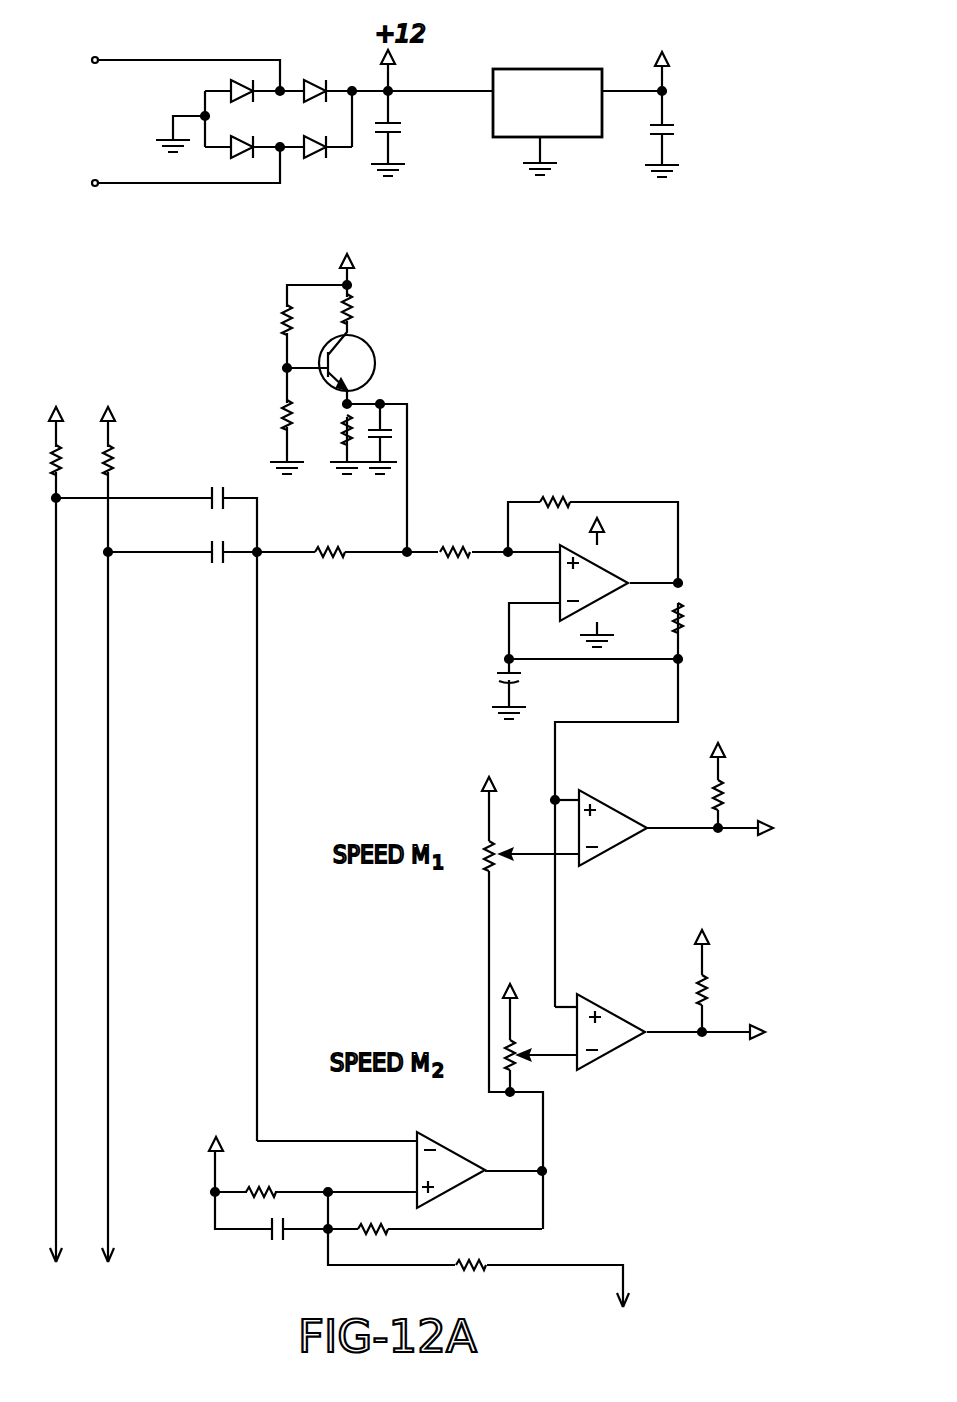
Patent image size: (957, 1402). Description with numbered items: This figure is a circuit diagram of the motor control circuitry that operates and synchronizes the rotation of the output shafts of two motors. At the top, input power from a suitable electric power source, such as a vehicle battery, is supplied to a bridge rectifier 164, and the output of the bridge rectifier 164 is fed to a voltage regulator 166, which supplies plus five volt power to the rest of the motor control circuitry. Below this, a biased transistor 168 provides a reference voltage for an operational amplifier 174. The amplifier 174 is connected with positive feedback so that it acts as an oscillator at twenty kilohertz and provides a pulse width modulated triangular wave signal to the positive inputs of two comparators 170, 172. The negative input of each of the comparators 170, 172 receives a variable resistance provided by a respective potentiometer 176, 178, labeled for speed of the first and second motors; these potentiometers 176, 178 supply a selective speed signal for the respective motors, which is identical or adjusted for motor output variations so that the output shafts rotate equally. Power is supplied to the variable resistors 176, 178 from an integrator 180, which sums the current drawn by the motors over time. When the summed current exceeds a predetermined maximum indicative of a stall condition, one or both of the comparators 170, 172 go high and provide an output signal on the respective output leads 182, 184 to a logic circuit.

The bridge rectifier 164 is at (333, 138).
The voltage regulator 166 is at (568, 70).
The biased transistor 168 is at (365, 353).
The comparator 170 is at (606, 812).
The comparator 172 is at (607, 1014).
The operational amplifier 174 is at (606, 571).
The potentiometer 176 is at (483, 848).
The potentiometer 178 is at (502, 1048).
The integrator 180 is at (448, 1156).
The output lead 182 is at (762, 812).
The output lead 184 is at (750, 1020).